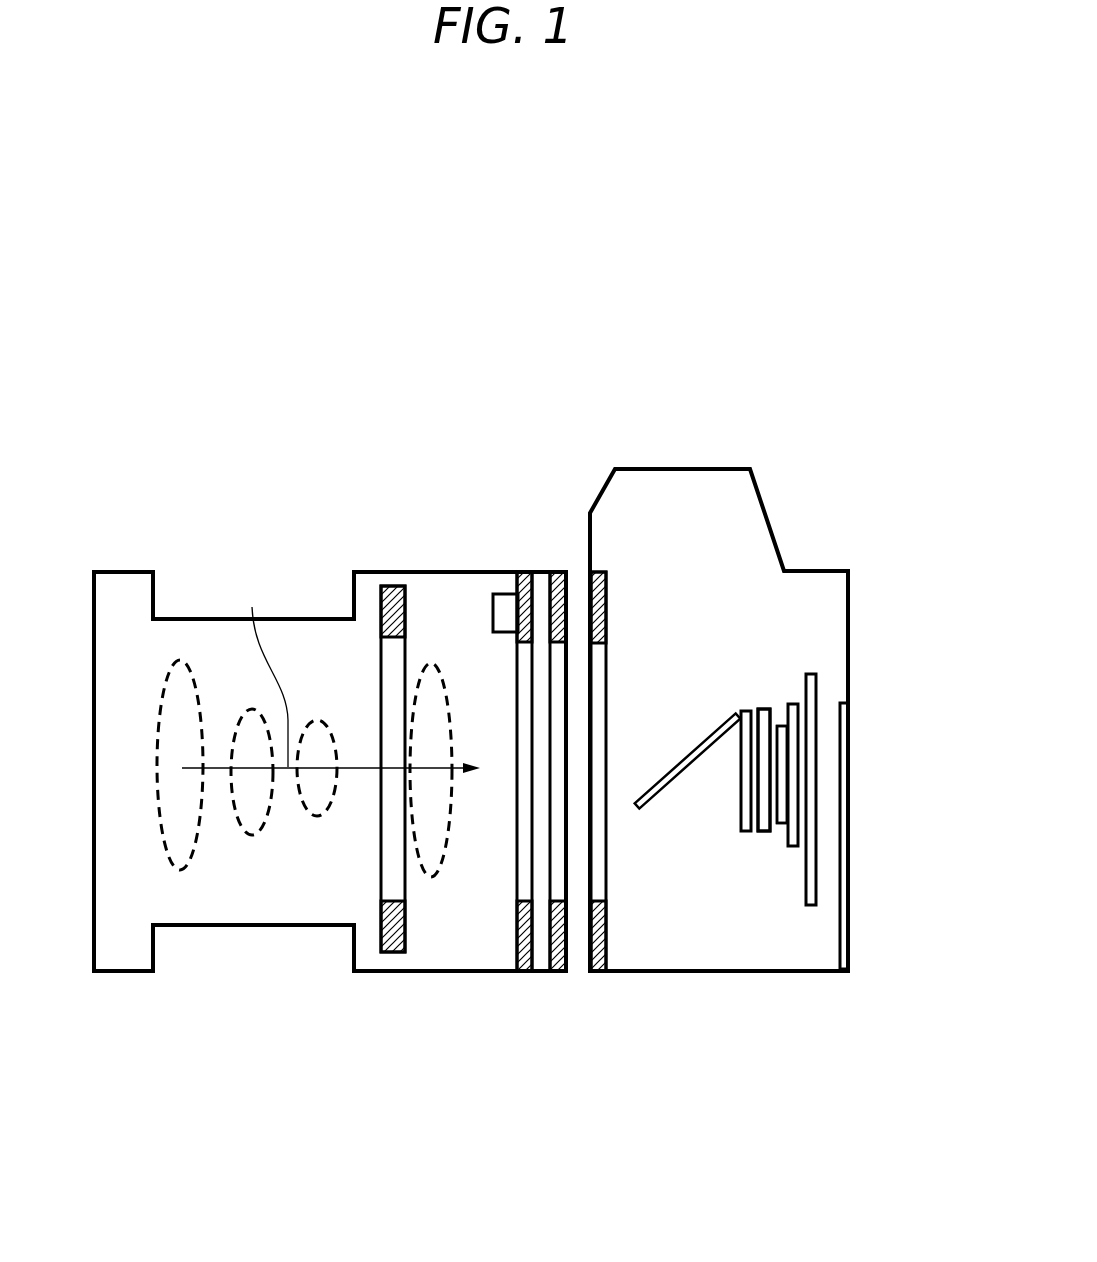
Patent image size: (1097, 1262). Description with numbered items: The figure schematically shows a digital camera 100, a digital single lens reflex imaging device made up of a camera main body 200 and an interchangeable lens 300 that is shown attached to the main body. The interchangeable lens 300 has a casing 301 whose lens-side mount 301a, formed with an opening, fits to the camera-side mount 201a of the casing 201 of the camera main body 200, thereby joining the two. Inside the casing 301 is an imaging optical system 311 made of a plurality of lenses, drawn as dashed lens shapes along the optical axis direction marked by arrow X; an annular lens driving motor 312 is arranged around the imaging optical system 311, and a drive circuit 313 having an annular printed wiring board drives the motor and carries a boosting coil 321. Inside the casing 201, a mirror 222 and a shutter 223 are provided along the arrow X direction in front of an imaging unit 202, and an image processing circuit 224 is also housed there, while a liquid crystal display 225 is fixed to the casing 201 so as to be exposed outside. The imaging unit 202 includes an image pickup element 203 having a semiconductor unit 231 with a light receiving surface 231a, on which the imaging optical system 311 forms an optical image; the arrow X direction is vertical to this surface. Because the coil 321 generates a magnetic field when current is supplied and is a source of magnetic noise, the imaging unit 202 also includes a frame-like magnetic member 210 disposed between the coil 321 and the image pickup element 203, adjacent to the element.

The digital camera 100 is at (524, 276).
The camera main body 200 is at (835, 447).
The casing 201 is at (773, 540).
The camera-side mount 201a is at (595, 975).
The imaging unit 202 is at (785, 860).
The image pickup element 203 is at (783, 724).
The magnetic member 210 is at (763, 833).
The mirror 222 is at (693, 763).
The shutter 223 is at (742, 833).
The image processing circuit 224 is at (817, 677).
The liquid crystal display 225 is at (850, 747).
The semiconductor unit 231 is at (763, 707).
The light receiving surface 231a is at (778, 800).
The interchangeable lens 300 is at (560, 555).
The casing 301 is at (140, 973).
The lens-side mount 301a is at (562, 974).
The imaging optical system 311 is at (418, 838).
The lens driving motor 312 is at (397, 950).
The drive circuit 313 is at (528, 937).
The coil 321 is at (505, 634).